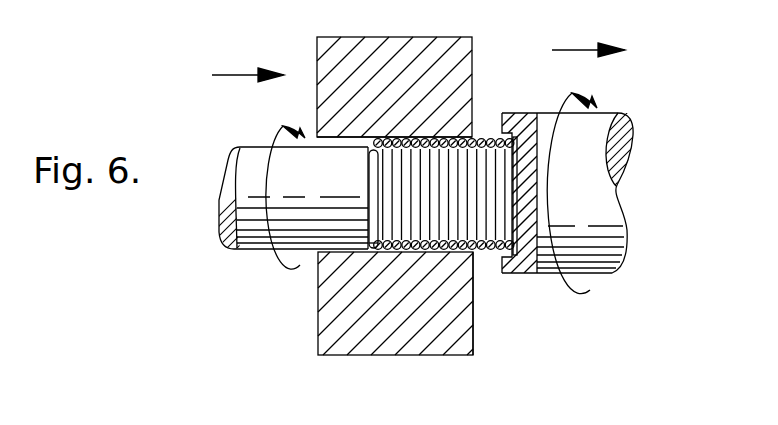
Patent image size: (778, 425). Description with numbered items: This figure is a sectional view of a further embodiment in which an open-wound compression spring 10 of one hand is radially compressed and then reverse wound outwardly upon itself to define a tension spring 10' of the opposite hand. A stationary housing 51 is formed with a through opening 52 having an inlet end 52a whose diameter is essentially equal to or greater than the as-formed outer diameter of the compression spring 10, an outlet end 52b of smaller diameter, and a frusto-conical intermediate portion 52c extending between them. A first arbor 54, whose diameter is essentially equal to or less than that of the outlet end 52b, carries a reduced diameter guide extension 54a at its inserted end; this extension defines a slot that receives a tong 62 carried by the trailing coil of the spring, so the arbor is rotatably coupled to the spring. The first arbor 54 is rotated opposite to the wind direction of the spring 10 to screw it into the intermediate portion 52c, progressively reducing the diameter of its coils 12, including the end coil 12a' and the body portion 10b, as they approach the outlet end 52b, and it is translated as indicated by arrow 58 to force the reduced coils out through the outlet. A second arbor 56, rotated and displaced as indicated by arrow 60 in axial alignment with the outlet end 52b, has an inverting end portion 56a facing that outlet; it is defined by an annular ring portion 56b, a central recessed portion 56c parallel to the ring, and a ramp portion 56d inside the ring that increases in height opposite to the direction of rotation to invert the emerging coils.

The compression spring 10 is at (439, 158).
The tension spring 10' is at (507, 140).
The spring body portion 10b is at (378, 137).
The spring coil 12 is at (421, 251).
The end coil 12a' is at (486, 130).
The stationary housing 51 is at (377, 356).
The through opening 52 is at (395, 224).
The inlet end 52a is at (323, 143).
The outlet end 52b is at (451, 253).
The intermediate portion 52c is at (425, 137).
The first arbor 54 is at (247, 252).
The guide extension 54a is at (371, 177).
The second arbor 56 is at (594, 189).
The inverting end portion 56a is at (512, 113).
The annular ring portion 56b is at (503, 271).
The central recessed portion 56c is at (510, 188).
The ramp portion 56d is at (505, 168).
The arrow 58 is at (265, 263).
The arrow 60 is at (228, 77).
The tong 62 is at (374, 196).